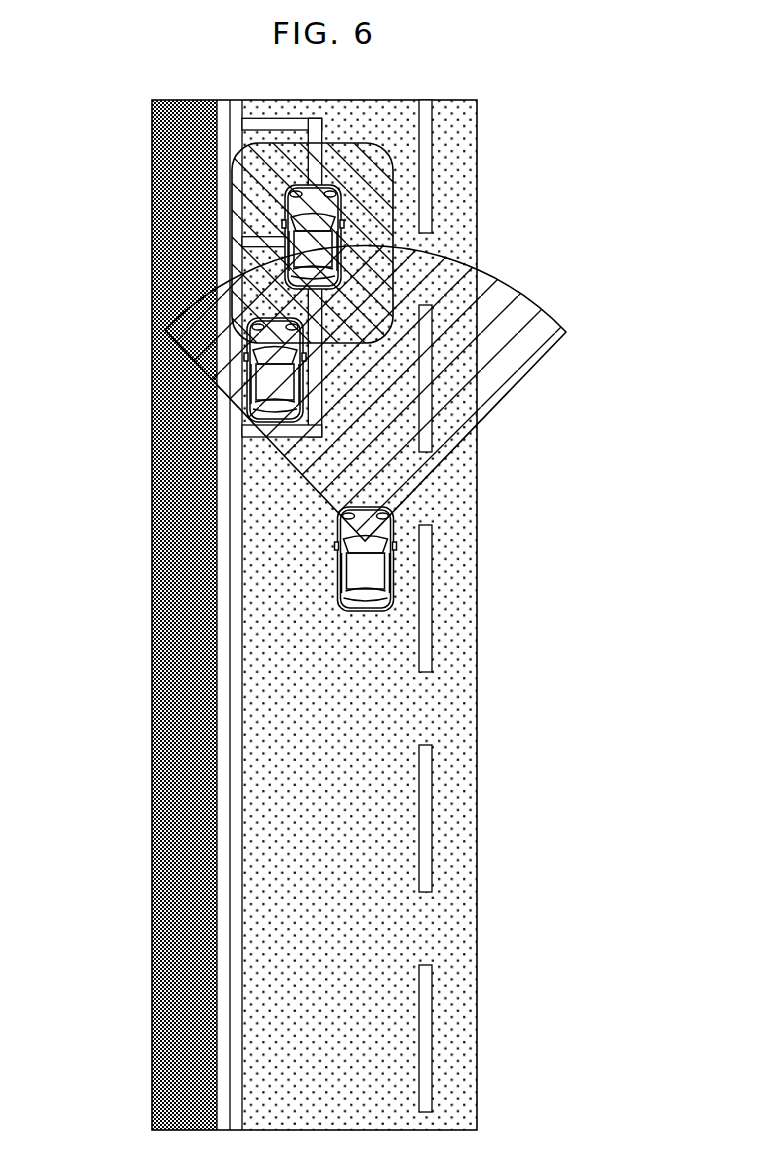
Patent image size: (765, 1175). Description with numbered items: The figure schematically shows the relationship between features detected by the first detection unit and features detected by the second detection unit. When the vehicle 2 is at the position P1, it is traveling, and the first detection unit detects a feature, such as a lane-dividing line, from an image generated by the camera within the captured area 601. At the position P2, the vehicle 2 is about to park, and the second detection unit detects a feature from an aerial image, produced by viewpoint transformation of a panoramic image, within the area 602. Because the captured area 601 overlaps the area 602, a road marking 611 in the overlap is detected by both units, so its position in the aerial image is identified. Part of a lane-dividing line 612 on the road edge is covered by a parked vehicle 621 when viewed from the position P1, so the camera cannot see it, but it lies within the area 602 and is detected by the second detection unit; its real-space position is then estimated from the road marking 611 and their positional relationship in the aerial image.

The vehicle 2 is at (310, 203).
The position P1 is at (322, 568).
The position P2 is at (255, 229).
The area captured by the camera 601 is at (527, 377).
The area represented in the aerial image 602 is at (393, 192).
The road marking 611 is at (312, 383).
The lane-dividing line 612 is at (243, 252).
The parked vehicle 621 is at (245, 385).